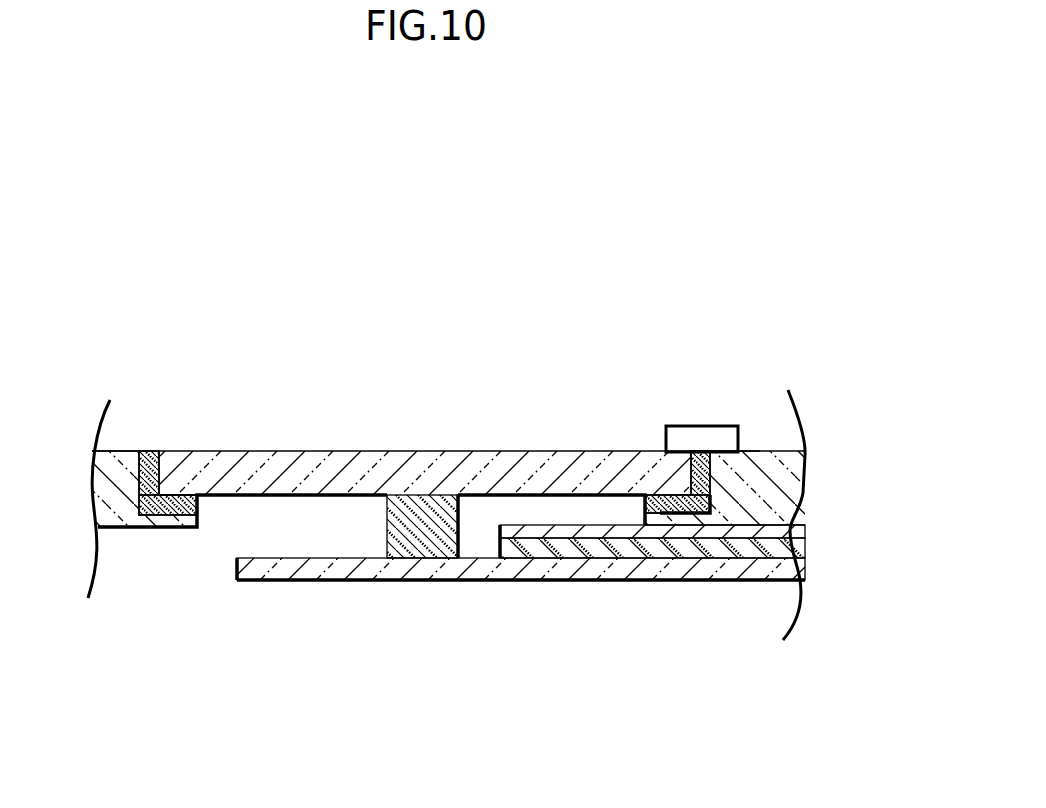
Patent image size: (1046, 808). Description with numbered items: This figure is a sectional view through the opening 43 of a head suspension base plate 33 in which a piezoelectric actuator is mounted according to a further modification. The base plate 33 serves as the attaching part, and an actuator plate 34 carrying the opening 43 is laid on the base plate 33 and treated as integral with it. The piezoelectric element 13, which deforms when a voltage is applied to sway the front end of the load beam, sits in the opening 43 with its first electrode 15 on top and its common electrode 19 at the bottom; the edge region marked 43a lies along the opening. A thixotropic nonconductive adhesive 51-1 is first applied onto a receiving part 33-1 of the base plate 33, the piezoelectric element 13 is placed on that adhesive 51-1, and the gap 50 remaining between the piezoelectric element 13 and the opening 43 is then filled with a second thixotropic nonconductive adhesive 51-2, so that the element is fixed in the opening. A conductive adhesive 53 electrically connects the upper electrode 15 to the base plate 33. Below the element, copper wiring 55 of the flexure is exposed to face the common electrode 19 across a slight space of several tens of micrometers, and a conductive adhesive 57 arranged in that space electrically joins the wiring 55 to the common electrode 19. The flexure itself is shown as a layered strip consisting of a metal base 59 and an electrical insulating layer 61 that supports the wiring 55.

The piezoelectric element 13 is at (375, 462).
The first electrode 15 is at (497, 452).
The common electrode 19 is at (290, 558).
The base plate 33 is at (650, 507).
The receiving part 33-1 is at (198, 508).
The actuator plate 34 is at (130, 513).
The opening 43 is at (138, 450).
The recess edge 43a is at (710, 452).
The gap 50 is at (152, 450).
The nonconductive adhesive 51-1 is at (148, 527).
The nonconductive adhesive 51-2 is at (150, 450).
The conductive adhesive 53 is at (697, 433).
The wiring 55 is at (383, 568).
The conductive adhesive 57 is at (458, 543).
The metal base 59 is at (780, 533).
The electrical insulating layer 61 is at (787, 550).